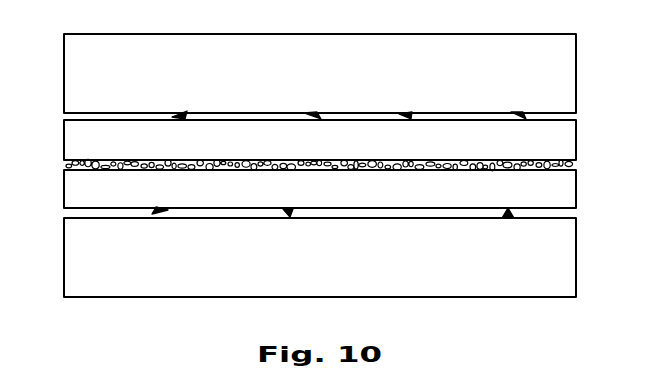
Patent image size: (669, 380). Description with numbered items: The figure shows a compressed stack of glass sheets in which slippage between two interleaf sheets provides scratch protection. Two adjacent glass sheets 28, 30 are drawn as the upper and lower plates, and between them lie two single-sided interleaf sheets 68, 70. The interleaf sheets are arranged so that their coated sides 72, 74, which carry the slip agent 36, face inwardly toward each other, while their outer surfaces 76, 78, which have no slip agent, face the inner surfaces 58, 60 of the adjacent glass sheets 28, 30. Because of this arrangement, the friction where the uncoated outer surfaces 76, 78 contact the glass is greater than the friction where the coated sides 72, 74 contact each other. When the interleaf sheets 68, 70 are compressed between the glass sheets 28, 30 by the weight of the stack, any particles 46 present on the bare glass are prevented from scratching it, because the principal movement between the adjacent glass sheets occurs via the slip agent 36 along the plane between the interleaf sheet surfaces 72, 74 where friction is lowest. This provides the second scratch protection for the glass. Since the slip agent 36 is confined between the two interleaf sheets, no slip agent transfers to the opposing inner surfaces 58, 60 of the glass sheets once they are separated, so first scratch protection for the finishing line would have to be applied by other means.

The glass sheet 28 is at (549, 67).
The glass sheet 30 is at (549, 262).
The slip agent 36 is at (564, 162).
The particles 46 is at (182, 112).
The inner surface of glass sheet 58 is at (348, 113).
The inner surface of glass sheet 60 is at (484, 217).
The single-sided interleaf sheet 68 is at (561, 141).
The single-sided interleaf sheet 70 is at (551, 199).
The coated side of interleaf sheet 72 is at (88, 160).
The coated side of interleaf sheet 74 is at (130, 166).
The outer surface of interleaf sheet 76 is at (277, 118).
The outer surface of interleaf sheet 78 is at (332, 208).